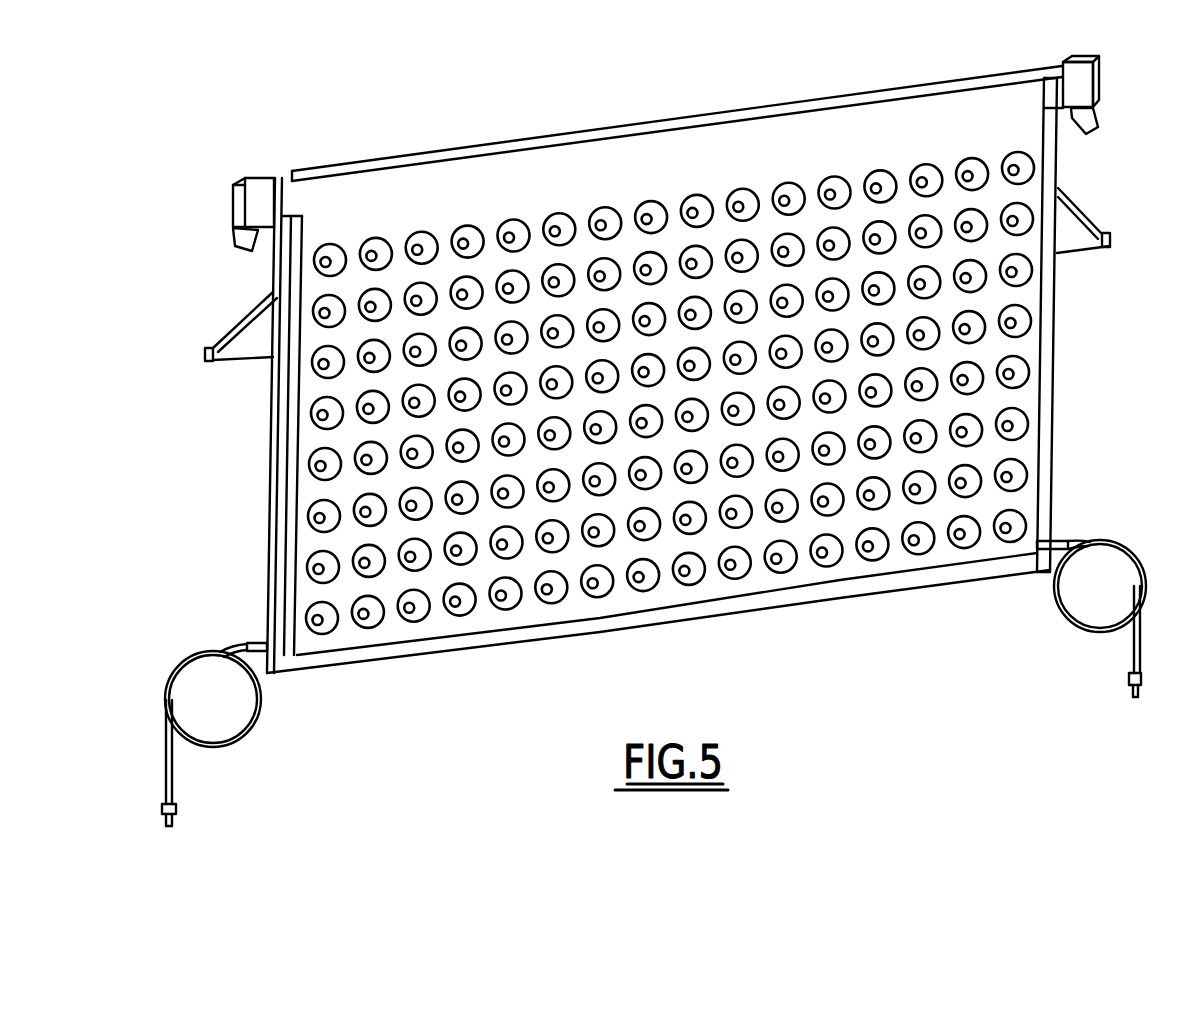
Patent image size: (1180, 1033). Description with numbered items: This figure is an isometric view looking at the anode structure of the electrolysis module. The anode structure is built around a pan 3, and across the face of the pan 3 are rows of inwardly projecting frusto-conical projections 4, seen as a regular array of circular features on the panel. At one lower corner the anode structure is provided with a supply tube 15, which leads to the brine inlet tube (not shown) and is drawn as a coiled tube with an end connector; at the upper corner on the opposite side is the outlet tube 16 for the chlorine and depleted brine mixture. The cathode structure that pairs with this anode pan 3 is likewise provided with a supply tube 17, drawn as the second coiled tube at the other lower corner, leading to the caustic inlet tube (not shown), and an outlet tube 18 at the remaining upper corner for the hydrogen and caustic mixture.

The pan 3 is at (519, 155).
The frusto-conical projections 4 is at (378, 517).
The supply tube 15 is at (1127, 656).
The outlet tube 16 is at (234, 238).
The supply tube 17 is at (176, 771).
The outlet tube 18 is at (1090, 130).